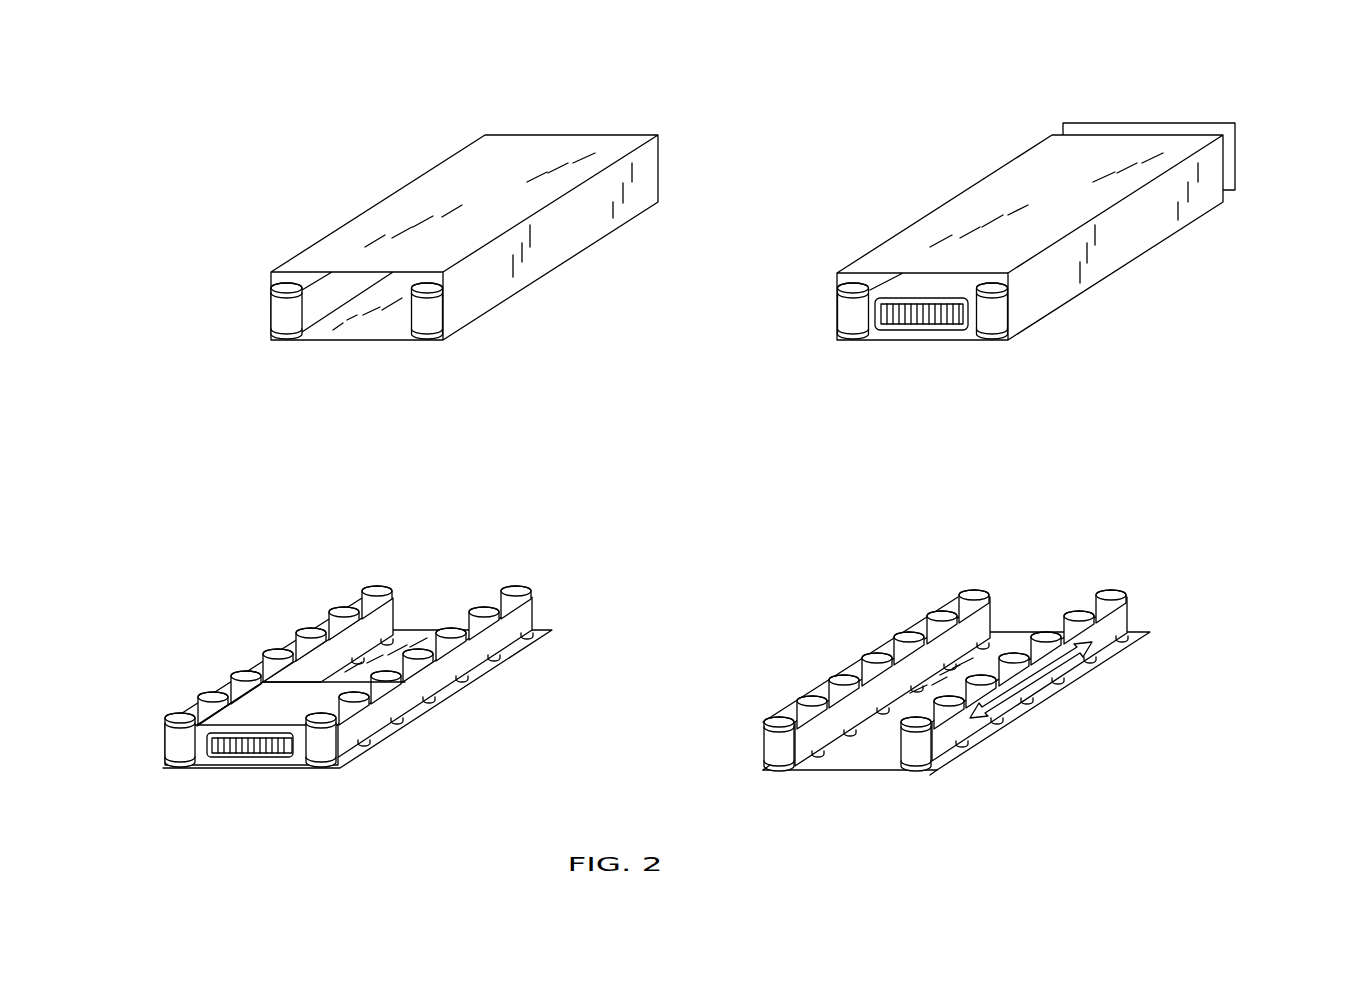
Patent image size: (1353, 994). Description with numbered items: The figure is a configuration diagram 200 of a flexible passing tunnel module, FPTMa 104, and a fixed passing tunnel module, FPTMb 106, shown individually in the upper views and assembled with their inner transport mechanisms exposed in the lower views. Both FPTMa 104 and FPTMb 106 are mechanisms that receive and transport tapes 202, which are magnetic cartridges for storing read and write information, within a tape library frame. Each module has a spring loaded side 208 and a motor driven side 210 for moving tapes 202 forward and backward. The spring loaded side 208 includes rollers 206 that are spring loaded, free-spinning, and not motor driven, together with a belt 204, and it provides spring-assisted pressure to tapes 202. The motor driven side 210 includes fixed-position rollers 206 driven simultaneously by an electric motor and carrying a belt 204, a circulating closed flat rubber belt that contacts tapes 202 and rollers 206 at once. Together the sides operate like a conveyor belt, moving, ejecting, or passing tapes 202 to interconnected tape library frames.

The configuration diagram 200 is at (235, 112).
The FPTMa 104 is at (1200, 753).
The FPTMb 106 is at (417, 635).
The tapes 202 is at (260, 698).
The belt 204 is at (1112, 636).
The rollers 206 is at (873, 656).
The spring loaded side 208 is at (756, 766).
The motor driven side 210 is at (943, 777).